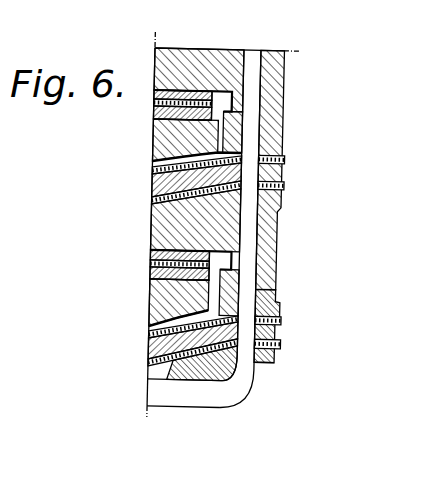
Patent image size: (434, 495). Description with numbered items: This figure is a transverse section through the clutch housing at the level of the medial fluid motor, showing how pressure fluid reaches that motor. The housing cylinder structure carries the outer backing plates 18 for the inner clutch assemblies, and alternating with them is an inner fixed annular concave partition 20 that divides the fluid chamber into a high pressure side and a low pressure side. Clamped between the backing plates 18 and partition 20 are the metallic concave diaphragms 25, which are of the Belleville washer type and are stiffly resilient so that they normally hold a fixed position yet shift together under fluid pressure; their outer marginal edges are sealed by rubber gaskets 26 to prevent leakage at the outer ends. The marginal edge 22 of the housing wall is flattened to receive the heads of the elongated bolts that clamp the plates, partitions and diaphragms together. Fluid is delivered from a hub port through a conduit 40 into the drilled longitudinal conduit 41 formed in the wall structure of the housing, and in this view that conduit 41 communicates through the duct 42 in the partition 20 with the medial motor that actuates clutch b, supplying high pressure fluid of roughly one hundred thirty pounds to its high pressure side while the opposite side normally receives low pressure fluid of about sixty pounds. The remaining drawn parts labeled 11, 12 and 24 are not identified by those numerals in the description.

The outer backing plate 18 is at (167, 60).
The upper packing insert 11 is at (158, 108).
The lower packing insert 12 is at (160, 273).
The retaining ring 24 is at (160, 144).
The concave diaphragm 25 is at (160, 170).
The fixed annular concave partition 20 is at (161, 186).
The rubber gasket 26 is at (161, 202).
The longitudinal conduit 41 is at (251, 231).
The high pressure inlet duct 42 is at (243, 170).
The marginal edge 22 is at (272, 361).
The conduit 40 is at (180, 397).